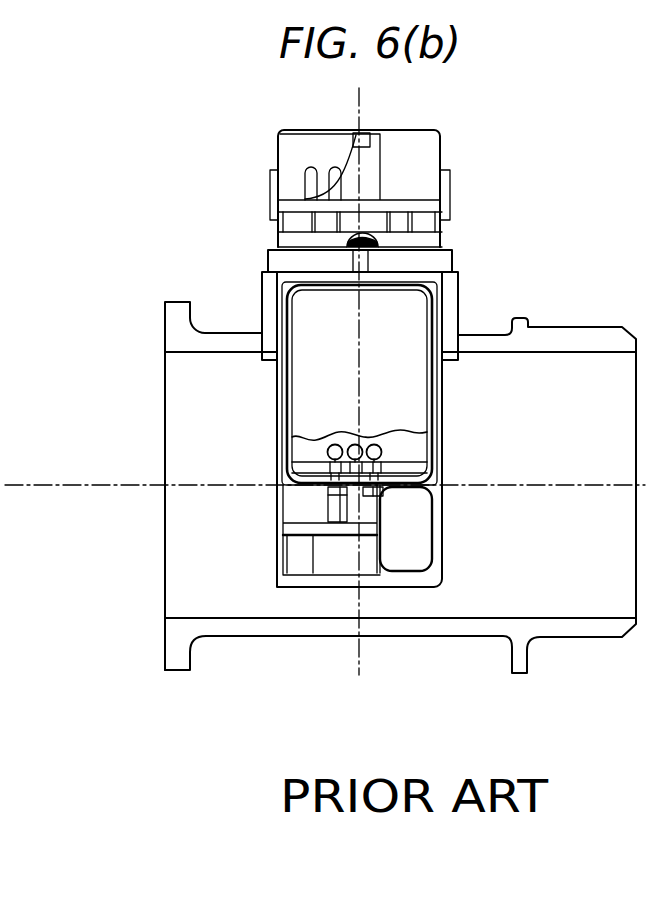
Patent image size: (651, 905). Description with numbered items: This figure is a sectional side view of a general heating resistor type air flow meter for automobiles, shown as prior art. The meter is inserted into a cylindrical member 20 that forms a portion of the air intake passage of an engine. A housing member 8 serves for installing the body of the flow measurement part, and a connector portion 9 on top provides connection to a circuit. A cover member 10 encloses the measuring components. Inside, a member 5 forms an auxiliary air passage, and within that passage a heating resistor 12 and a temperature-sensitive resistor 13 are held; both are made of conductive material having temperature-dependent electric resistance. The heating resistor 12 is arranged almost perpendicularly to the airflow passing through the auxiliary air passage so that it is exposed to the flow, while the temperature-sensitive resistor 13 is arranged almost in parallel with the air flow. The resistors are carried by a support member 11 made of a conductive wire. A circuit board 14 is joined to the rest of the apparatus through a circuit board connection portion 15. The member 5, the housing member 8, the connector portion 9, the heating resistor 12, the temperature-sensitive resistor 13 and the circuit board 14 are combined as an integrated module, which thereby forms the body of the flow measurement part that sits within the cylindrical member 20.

The member forming an auxiliary air passage 5 is at (372, 460).
The housing member 8 is at (441, 246).
The connector portion 9 is at (307, 192).
The cover member 10 is at (402, 385).
The support member 11 is at (335, 472).
The heating resistor 12 is at (338, 485).
The temperature-sensitive resistor 13 is at (378, 496).
The circuit board 14 is at (303, 452).
The circuit board connection portion 15 is at (323, 462).
The cylindrical member 20 is at (165, 323).